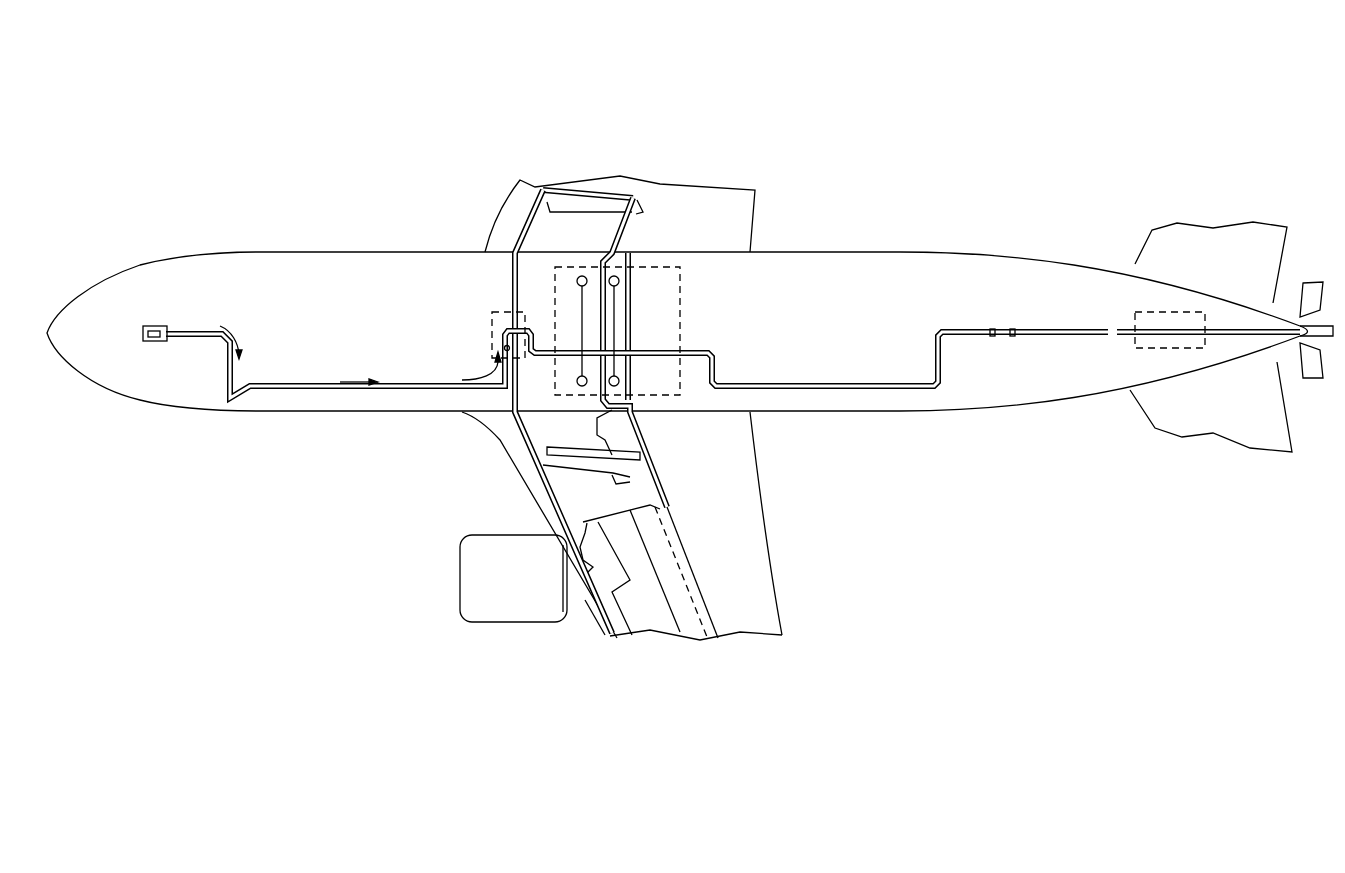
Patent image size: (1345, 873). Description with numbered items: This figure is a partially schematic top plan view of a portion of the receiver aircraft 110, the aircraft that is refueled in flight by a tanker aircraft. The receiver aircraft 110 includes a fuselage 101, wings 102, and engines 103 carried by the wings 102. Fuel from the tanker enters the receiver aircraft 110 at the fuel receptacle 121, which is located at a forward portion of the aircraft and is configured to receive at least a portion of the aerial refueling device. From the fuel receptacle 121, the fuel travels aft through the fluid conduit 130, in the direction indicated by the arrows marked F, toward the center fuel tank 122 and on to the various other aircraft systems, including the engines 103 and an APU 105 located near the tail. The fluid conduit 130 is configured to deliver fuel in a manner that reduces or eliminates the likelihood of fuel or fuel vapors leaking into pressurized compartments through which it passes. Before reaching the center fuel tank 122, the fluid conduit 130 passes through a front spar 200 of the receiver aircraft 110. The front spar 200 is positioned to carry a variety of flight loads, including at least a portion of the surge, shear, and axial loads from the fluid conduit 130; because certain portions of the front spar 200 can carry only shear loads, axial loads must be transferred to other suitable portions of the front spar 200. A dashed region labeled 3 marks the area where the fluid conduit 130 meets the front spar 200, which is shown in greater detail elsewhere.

The receiver aircraft 110 is at (925, 101).
The fuselage 101 is at (905, 252).
The wings 102 is at (745, 220).
The engines 103 is at (493, 622).
The APU 105 is at (1143, 311).
The fuel receptacle 121 is at (143, 328).
The center fuel tank 122 is at (675, 267).
The fluid conduit 130 is at (315, 390).
The front spar 200 is at (512, 277).
The detail region of FIG. 3 is at (492, 330).